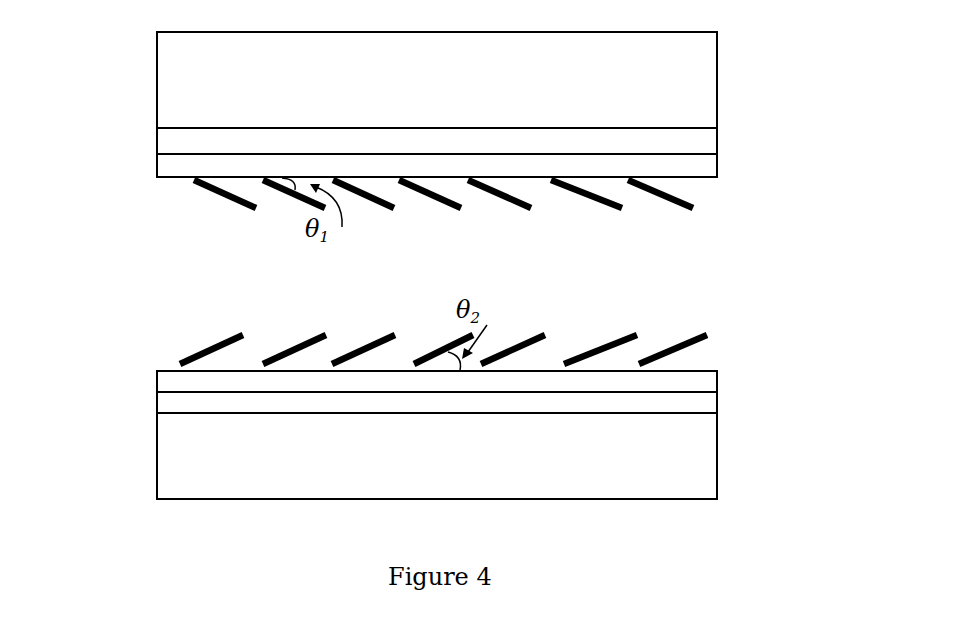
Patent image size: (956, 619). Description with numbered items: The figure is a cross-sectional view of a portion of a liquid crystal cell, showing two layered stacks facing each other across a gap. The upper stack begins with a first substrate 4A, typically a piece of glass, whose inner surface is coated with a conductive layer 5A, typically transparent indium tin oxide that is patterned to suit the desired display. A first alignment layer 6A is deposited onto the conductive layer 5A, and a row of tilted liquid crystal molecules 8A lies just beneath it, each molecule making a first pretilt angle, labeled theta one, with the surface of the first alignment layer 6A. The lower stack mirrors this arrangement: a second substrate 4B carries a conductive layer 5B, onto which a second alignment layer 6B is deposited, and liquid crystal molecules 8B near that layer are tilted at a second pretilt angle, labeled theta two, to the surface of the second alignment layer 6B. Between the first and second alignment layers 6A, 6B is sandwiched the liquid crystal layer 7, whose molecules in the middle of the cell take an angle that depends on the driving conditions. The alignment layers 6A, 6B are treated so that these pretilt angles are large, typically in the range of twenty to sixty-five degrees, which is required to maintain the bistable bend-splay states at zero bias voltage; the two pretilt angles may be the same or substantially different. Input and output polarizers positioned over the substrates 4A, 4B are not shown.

The first substrate 4A is at (687, 73).
The conductive layer 5A is at (687, 138).
The first alignment layer 6A is at (183, 167).
The liquid crystal molecules 8A is at (210, 208).
The liquid crystal layer 7 is at (212, 275).
The liquid crystal molecules 8B is at (198, 343).
The second alignment layer 6B is at (680, 382).
The conductive layer 5B is at (202, 402).
The second substrate 4B is at (202, 456).